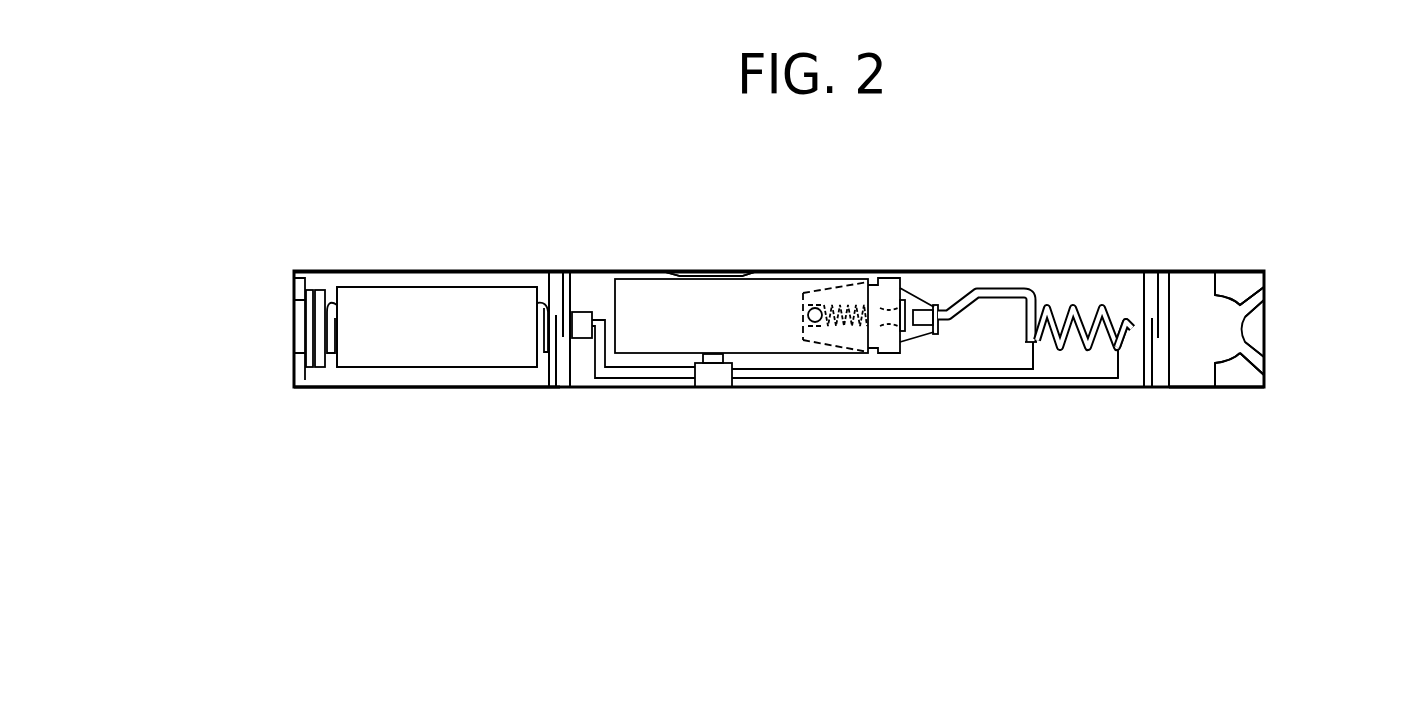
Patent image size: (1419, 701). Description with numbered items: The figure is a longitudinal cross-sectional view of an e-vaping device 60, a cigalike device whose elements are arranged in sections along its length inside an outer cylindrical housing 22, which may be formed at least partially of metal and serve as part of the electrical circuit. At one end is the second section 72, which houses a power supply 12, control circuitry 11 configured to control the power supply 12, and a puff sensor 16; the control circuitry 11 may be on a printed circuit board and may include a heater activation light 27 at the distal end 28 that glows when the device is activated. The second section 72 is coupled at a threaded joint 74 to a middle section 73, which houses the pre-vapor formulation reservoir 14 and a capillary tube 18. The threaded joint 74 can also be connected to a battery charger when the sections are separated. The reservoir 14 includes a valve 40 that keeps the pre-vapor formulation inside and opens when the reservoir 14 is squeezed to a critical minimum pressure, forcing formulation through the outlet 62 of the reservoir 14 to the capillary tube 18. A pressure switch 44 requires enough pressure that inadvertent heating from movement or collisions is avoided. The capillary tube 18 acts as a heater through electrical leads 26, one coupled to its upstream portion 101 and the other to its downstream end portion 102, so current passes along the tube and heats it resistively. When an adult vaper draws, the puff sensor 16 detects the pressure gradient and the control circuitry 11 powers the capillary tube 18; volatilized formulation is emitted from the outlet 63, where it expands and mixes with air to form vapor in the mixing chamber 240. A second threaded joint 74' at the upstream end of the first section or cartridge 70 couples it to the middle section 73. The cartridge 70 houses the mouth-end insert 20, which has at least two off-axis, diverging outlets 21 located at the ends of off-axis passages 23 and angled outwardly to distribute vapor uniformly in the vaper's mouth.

The control circuitry 11 is at (318, 367).
The power supply 12 is at (370, 285).
The reservoir 14 is at (733, 310).
The puff sensor 16 is at (297, 281).
The capillary tube 18 is at (1073, 308).
The mouth-end insert 20 is at (1266, 323).
The outlets 21 is at (1264, 292).
The outer cylindrical housing 22 is at (805, 271).
The off-axis passages 23 is at (1257, 293).
The electrical leads 26 is at (965, 378).
The heater activation light 27 is at (298, 316).
The distal end 28 is at (297, 372).
The valve 40 is at (846, 330).
The pressure switch 44 is at (713, 355).
The e-vaping device 60 is at (718, 192).
The outlet of the reservoir 62 is at (948, 303).
The outlet 63 is at (1130, 312).
The first section or cartridge 70 is at (1197, 388).
The second section 72 is at (433, 269).
The middle section 73 is at (912, 272).
The threaded joint 74 is at (545, 289).
The threaded joint 74' is at (1161, 253).
The upstream portion 101 is at (1022, 343).
The downstream end portion 102 is at (690, 272).
The mixing chamber 240 is at (1193, 343).